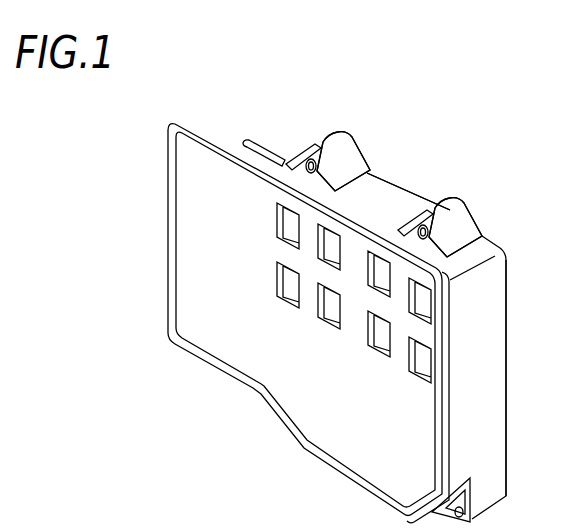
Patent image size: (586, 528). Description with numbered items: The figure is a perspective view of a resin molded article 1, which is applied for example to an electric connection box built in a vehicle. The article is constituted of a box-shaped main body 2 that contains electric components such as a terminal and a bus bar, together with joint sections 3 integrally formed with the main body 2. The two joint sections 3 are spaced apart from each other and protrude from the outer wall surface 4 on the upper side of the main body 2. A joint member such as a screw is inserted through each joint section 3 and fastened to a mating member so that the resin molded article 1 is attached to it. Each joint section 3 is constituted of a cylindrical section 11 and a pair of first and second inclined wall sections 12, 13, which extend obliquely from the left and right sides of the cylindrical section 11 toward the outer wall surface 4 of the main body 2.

The resin molded article 1 is at (443, 118).
The main body 2 is at (498, 370).
The joint section 3 is at (347, 127).
The outer wall surface 4 is at (373, 198).
The cylindrical section 11 is at (313, 160).
The first inclined wall section 12 is at (287, 163).
The second inclined wall section 13 is at (350, 155).